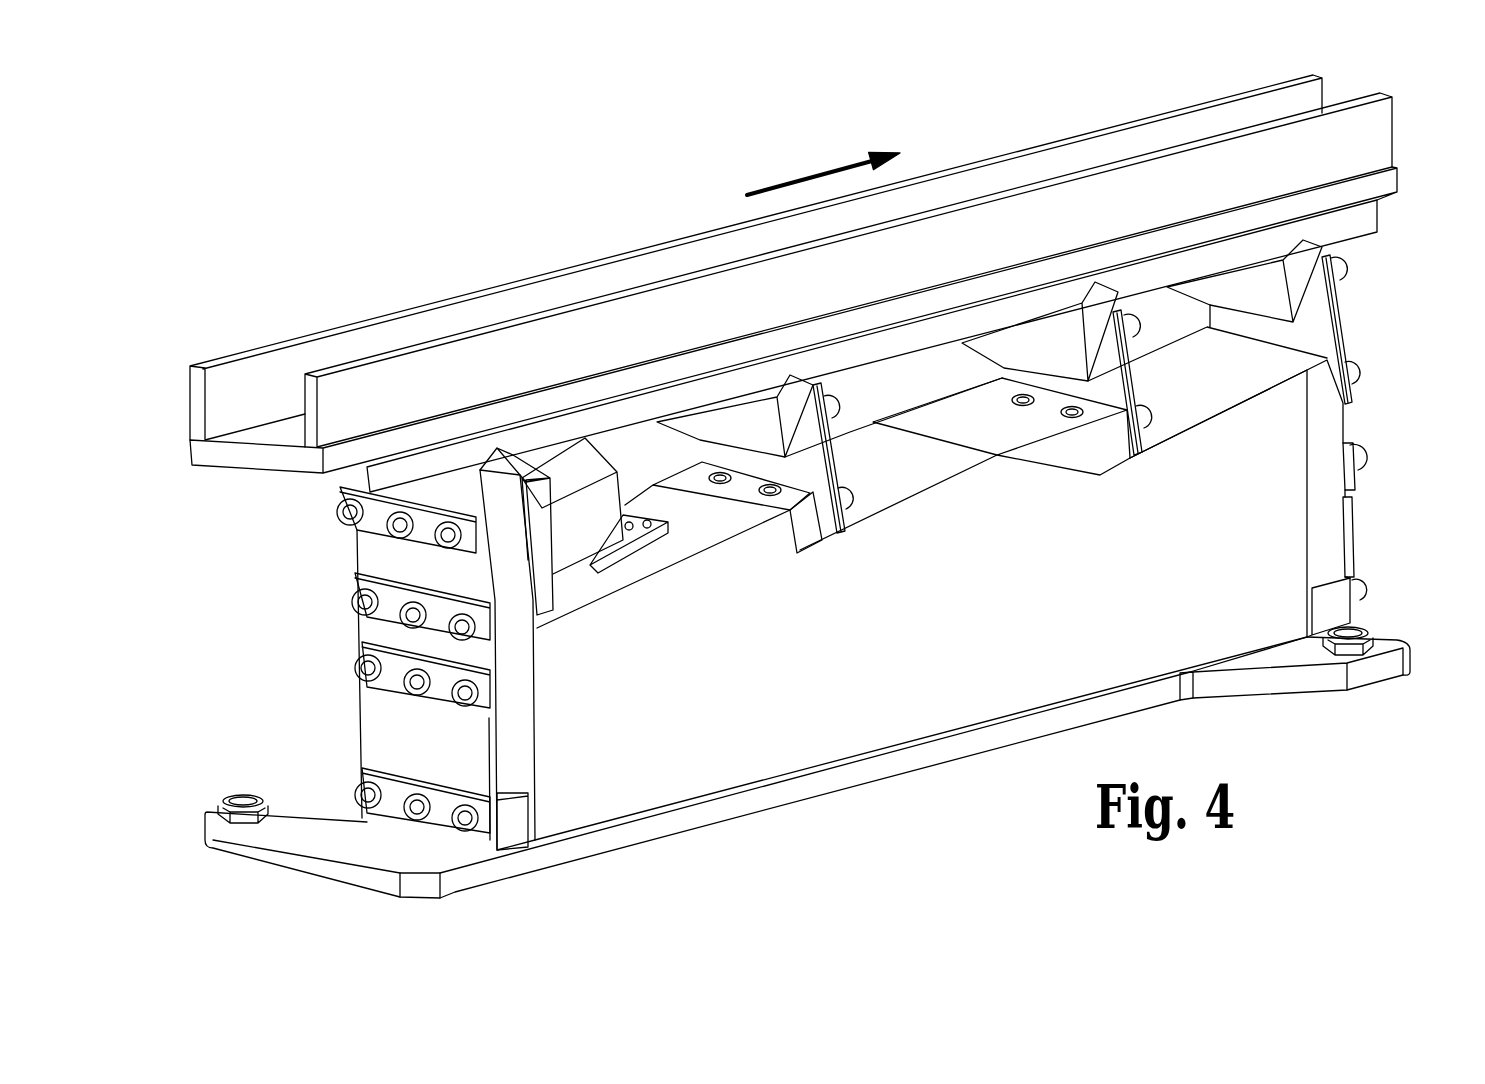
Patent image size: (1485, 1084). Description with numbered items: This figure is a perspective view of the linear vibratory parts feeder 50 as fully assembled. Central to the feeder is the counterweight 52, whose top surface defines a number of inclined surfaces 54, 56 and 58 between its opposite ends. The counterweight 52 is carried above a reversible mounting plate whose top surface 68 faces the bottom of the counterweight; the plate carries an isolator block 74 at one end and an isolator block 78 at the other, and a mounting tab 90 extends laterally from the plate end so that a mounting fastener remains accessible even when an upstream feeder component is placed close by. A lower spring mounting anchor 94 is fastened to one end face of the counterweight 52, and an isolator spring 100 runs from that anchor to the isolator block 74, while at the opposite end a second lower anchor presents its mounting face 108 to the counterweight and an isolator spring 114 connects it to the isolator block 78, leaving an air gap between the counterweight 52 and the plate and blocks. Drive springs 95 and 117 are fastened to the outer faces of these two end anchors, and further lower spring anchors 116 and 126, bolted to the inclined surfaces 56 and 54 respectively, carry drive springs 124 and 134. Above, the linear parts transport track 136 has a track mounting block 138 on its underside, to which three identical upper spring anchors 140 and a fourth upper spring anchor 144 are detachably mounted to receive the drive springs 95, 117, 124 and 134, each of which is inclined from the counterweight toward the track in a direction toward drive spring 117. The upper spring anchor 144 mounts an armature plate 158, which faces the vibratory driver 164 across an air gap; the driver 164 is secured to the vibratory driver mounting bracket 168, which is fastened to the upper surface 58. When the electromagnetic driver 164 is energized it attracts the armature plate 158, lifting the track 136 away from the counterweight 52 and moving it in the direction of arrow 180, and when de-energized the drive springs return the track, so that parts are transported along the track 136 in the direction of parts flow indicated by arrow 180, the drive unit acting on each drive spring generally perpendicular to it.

The linear vibratory parts feeder 50 is at (1078, 88).
The counterweight 52 is at (942, 572).
The inclined surface 54 is at (1225, 385).
The inclined surface 56 is at (885, 470).
The upper surface 58 is at (700, 528).
The top surface 68 is at (858, 771).
The isolator block 74 is at (1330, 605).
The isolator block 78 is at (520, 825).
The mounting tab 90 is at (215, 812).
The lower spring mounting anchor 94 is at (1320, 470).
The drive spring 95 is at (1345, 333).
The isolator spring 100 is at (1360, 520).
The mounting face 108 is at (518, 692).
The isolator spring 114 is at (414, 738).
The lower spring anchor 116 is at (812, 548).
The drive spring 117 is at (400, 572).
The drive spring 124 is at (832, 455).
The lower spring anchor 126 is at (1115, 440).
The drive spring 134 is at (1133, 392).
The parts transport track 136 is at (1398, 112).
The track mounting block 138 is at (1380, 213).
The upper spring anchor 140 is at (729, 430).
The upper spring anchor 144 is at (479, 518).
The armature plate 158 is at (537, 563).
The vibratory driver 164 is at (566, 533).
The vibratory driver mounting bracket 168 is at (645, 522).
The arrow 180 is at (785, 183).